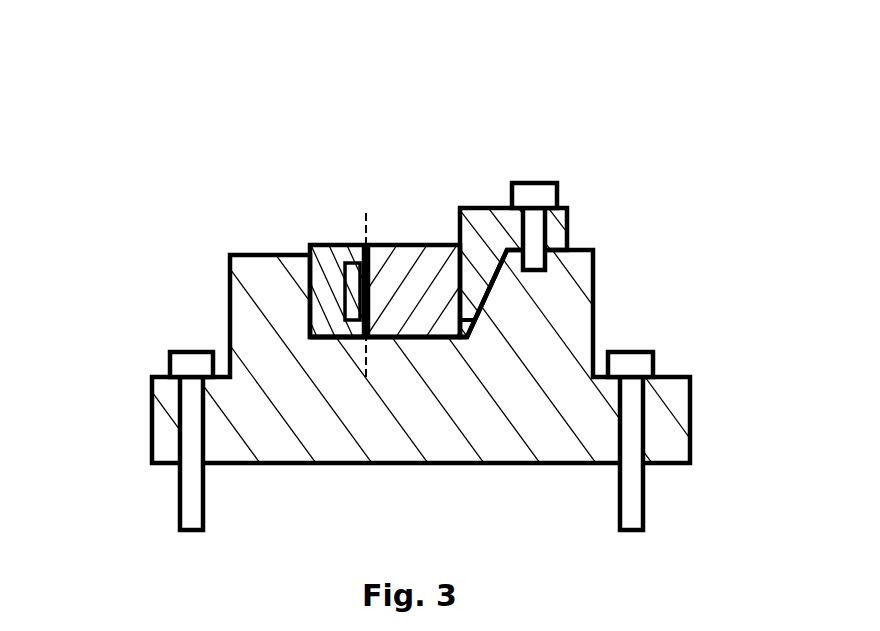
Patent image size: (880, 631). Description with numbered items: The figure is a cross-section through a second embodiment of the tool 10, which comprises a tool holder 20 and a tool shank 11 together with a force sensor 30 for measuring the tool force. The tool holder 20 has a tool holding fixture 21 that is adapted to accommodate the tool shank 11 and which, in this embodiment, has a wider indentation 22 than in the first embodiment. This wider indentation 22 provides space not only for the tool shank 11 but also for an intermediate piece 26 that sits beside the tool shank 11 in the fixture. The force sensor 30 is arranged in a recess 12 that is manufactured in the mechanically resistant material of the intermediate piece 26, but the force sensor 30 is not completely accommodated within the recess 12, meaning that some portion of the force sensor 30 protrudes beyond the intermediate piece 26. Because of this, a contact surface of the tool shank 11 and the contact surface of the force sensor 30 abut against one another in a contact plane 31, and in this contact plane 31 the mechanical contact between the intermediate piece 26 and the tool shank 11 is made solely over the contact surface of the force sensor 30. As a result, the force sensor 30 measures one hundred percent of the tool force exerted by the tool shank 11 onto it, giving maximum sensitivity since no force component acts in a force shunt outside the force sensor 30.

The tool 10 is at (178, 104).
The tool shank 11 is at (420, 245).
The recess 12 is at (327, 243).
The tool holder 20 is at (211, 285).
The tool holding fixture 21 is at (508, 279).
The indentation 22 is at (389, 340).
The intermediate piece 26 is at (340, 338).
The force sensor 30 is at (345, 297).
The contact plane 31 is at (368, 348).